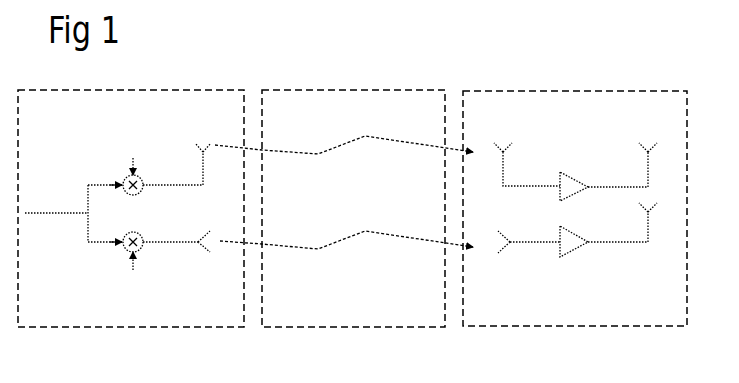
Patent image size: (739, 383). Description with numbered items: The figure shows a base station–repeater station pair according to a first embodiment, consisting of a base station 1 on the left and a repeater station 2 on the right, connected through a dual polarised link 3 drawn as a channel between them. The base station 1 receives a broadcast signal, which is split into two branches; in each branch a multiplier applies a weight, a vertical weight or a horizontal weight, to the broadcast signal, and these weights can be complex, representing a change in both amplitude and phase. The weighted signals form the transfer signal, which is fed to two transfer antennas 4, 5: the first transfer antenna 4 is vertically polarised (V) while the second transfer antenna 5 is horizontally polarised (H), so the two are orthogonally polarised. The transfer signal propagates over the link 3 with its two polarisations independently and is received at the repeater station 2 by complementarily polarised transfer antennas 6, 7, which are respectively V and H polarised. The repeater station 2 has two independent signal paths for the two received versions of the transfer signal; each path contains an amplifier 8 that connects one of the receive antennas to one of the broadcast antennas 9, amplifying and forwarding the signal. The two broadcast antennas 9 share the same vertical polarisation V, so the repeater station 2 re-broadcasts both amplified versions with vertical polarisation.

The base station 1 is at (131, 211).
The repeater station 2 is at (542, 207).
The dual polarised link 3 is at (333, 325).
The first transfer antenna 4 is at (205, 148).
The second transfer antenna 5 is at (204, 246).
The transfer antenna 6 is at (511, 145).
The transfer antenna 7 is at (497, 255).
The amplifier 8 is at (572, 177).
The broadcast antennas 9 is at (657, 258).